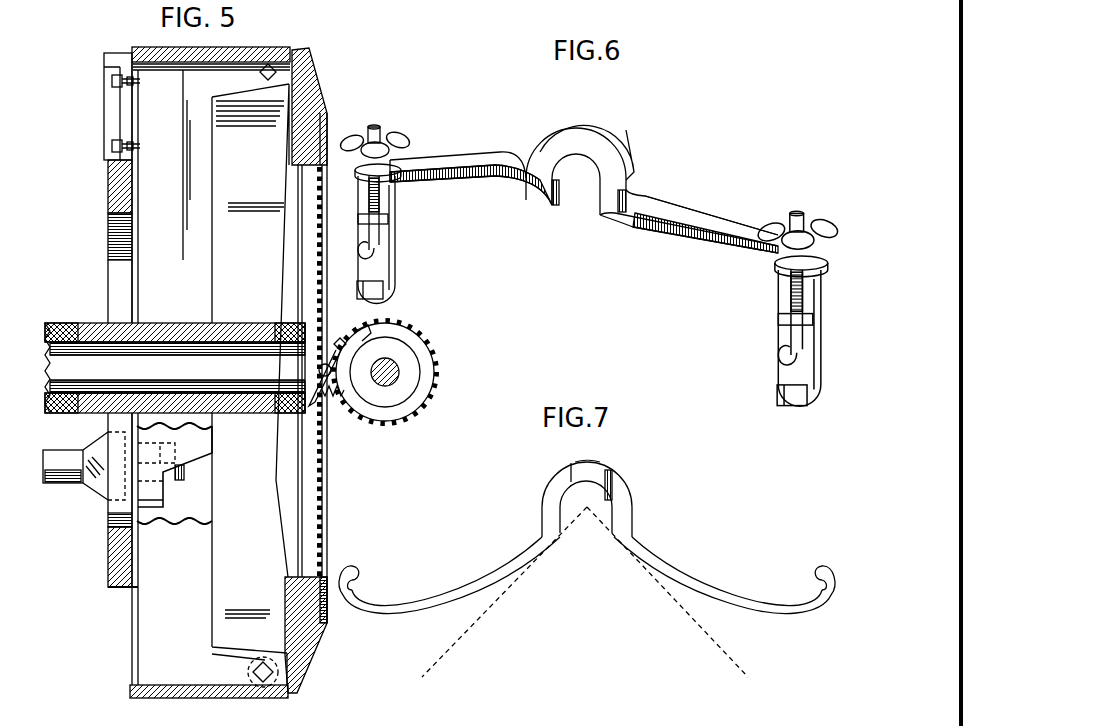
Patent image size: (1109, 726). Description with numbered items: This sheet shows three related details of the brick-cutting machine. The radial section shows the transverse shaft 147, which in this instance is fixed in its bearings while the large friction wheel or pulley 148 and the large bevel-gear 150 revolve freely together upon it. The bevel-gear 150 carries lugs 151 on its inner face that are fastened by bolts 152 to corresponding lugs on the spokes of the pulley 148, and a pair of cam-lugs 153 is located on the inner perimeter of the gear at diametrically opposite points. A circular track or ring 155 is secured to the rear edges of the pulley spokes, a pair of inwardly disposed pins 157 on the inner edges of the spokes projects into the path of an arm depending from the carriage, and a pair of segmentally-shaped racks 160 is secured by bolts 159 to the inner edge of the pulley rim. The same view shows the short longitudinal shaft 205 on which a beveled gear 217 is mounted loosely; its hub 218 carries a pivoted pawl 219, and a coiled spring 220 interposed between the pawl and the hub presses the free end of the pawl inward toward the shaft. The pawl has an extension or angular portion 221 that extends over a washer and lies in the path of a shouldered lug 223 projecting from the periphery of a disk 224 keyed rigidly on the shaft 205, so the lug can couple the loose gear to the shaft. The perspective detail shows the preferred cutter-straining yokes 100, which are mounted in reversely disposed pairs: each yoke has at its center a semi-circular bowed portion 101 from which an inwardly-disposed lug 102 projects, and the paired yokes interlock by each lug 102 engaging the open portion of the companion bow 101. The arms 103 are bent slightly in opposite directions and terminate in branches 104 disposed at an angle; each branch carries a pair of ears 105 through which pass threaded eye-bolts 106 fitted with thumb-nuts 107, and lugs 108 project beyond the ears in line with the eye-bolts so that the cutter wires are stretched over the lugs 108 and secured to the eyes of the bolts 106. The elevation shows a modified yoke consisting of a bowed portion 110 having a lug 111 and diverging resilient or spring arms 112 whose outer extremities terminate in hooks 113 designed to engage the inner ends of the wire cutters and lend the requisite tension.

In FIG. 5, the transverse shaft 147 is at (153, 363).
In FIG. 5, the large friction wheel or pulley 148 is at (167, 690).
In FIG. 5, the large bevel-gear 150 is at (322, 188).
In FIG. 5, the lugs 151 is at (283, 92).
In FIG. 5, the bolts 152 is at (275, 50).
In FIG. 5, the cam-lugs 153 is at (297, 164).
In FIG. 5, the circular track or ring 155 is at (110, 186).
In FIG. 5, the inwardly disposed pins 157 is at (55, 485).
In FIG. 5, the bolts 159 is at (137, 113).
In FIG. 5, the segmentally-shaped racks 160 is at (104, 118).
In FIG. 5, the short longitudinal shaft 205 is at (372, 386).
In FIG. 5, the beveled gear 217 is at (433, 339).
In FIG. 5, the hub 218 is at (428, 373).
In FIG. 5, the pivoted pawl 219 is at (336, 350).
In FIG. 5, the coiled spring 220 is at (332, 413).
In FIG. 5, the extension or angular portion 221 is at (343, 348).
In FIG. 5, the shouldered lug 223 is at (372, 330).
In FIG. 5, the disk 224 is at (392, 373).
In FIG. 6, the yokes 100 is at (730, 212).
In FIG. 6, the semi-circular bowed portion 101 is at (632, 165).
In FIG. 6, the inwardly-disposed lug 102 is at (627, 132).
In FIG. 6, the arms 103 is at (470, 177).
In FIG. 6, the branches 104 is at (793, 372).
In FIG. 6, the ears 105 is at (392, 172).
In FIG. 6, the eye-bolts 106 is at (380, 218).
In FIG. 6, the thumb-nuts 107 is at (405, 138).
In FIG. 6, the lugs 108 is at (367, 286).
In FIG. 7, the bowed portion 110 is at (623, 491).
In FIG. 7, the lug 111 is at (583, 464).
In FIG. 7, the diverging resilient or spring arms 112 is at (448, 590).
In FIG. 7, the hooks 113 is at (355, 570).